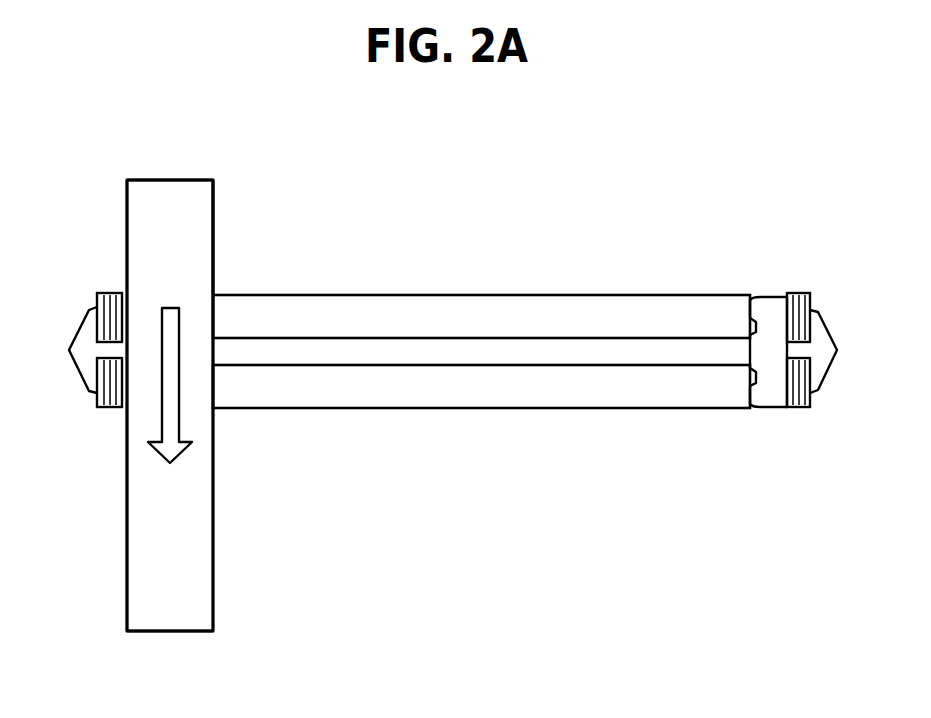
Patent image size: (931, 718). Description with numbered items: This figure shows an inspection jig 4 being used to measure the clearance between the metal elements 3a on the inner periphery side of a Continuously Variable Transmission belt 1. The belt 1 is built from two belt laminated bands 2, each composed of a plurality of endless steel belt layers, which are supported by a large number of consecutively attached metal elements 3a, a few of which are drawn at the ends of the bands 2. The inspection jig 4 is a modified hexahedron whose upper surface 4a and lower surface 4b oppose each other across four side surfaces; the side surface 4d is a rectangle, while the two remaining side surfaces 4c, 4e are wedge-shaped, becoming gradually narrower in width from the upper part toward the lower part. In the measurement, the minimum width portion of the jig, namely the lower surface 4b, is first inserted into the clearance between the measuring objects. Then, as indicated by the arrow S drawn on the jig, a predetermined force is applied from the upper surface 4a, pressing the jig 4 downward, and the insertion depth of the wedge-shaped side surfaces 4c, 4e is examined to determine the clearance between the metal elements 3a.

The Continuously Variable Transmission (CVT) belt 1 is at (680, 208).
The belt laminated band 2 is at (517, 305).
The metal element 3a is at (83, 310).
The inspection jig 4 is at (228, 146).
The upper surface 4a is at (155, 179).
The lower surface 4b is at (168, 631).
The wedge-shaped side surface 4c is at (213, 568).
The rectangular side surface 4d is at (200, 265).
The wedge-shaped side surface 4e is at (126, 568).
The arrow indicating applied force S is at (162, 418).